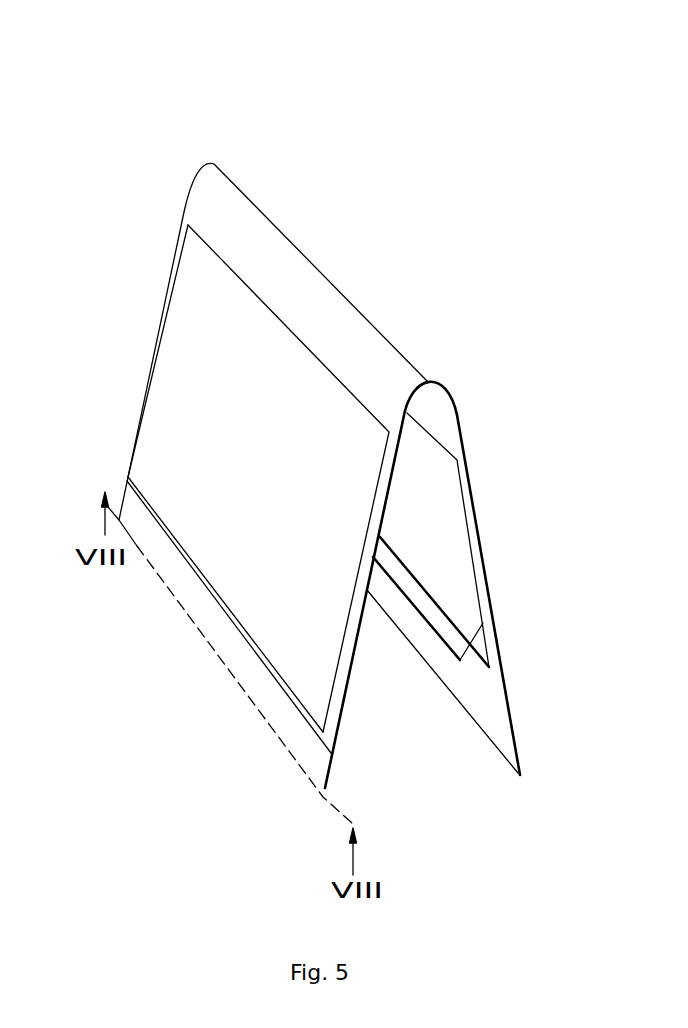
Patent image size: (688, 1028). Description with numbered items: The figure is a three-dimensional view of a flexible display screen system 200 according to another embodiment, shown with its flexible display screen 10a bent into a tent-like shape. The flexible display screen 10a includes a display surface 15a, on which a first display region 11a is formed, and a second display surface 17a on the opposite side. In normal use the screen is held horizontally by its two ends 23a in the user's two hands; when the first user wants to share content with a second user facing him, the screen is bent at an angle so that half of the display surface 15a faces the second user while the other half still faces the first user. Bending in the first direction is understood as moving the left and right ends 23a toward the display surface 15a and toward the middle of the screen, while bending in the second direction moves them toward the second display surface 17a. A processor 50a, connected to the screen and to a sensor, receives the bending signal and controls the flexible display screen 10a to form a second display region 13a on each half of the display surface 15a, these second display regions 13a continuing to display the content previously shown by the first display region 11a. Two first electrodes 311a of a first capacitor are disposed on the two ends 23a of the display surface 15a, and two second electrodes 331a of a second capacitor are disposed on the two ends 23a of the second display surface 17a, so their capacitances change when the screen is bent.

The flexible display screen system 200 is at (57, 50).
The flexible display screen 10a is at (231, 154).
The first display region 11a is at (187, 350).
The second display region 13a is at (437, 520).
The display surface 15a is at (207, 266).
The second display surface 17a is at (425, 473).
The ends 23a is at (340, 789).
The first electrodes 311a is at (245, 662).
The second electrodes 331a is at (407, 620).
The processor 50a is at (442, 630).